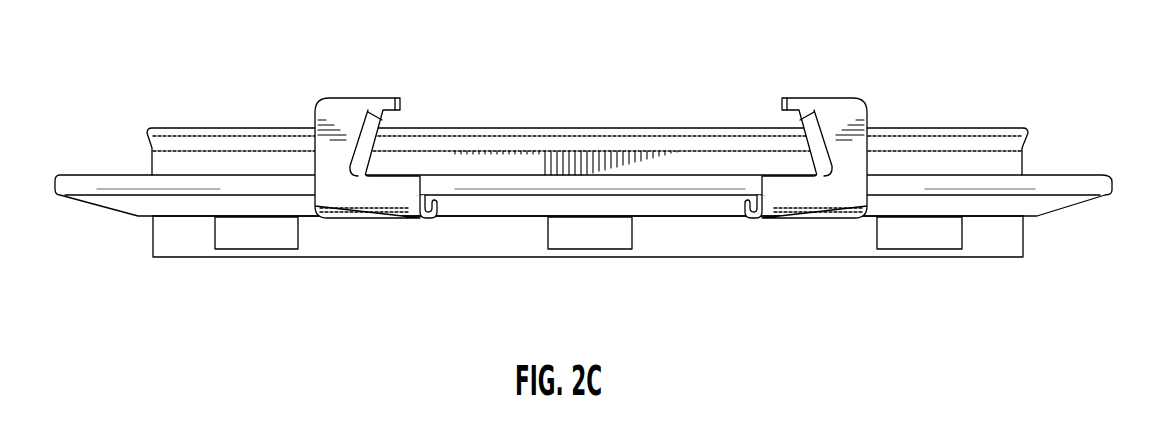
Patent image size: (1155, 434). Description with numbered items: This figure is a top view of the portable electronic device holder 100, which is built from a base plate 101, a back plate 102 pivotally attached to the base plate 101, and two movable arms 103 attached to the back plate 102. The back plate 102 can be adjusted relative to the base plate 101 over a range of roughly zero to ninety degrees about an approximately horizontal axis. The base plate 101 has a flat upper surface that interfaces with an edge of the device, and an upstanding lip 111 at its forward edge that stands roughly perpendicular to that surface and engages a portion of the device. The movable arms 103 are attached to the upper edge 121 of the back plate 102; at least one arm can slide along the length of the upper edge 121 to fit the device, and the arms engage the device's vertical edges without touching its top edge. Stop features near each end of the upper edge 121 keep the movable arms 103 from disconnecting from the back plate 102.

The portable electronic device holder 100 is at (99, 42).
The base plate 101 is at (435, 165).
The back plate 102 is at (177, 204).
The movable arm 103 is at (348, 110).
The upstanding lip 111 is at (538, 132).
The upper edge 121 is at (105, 180).